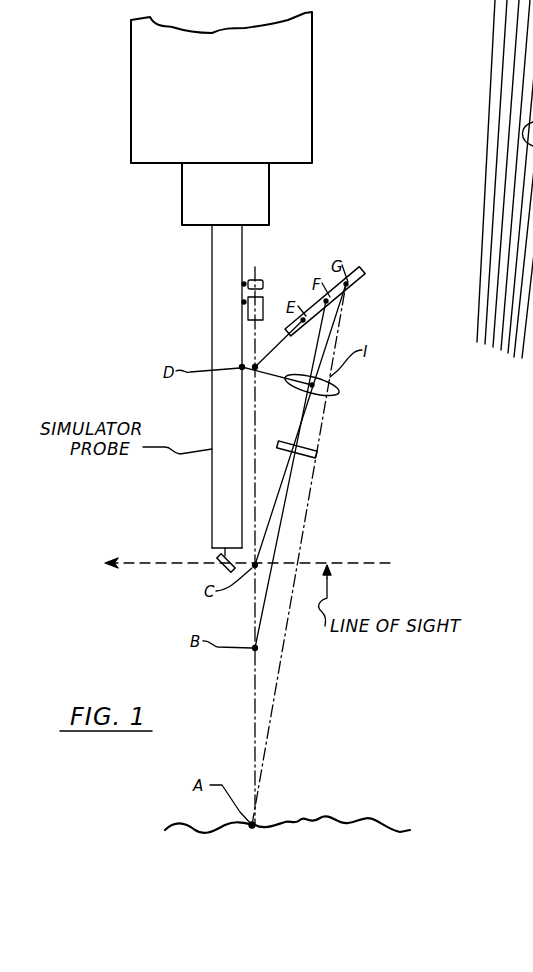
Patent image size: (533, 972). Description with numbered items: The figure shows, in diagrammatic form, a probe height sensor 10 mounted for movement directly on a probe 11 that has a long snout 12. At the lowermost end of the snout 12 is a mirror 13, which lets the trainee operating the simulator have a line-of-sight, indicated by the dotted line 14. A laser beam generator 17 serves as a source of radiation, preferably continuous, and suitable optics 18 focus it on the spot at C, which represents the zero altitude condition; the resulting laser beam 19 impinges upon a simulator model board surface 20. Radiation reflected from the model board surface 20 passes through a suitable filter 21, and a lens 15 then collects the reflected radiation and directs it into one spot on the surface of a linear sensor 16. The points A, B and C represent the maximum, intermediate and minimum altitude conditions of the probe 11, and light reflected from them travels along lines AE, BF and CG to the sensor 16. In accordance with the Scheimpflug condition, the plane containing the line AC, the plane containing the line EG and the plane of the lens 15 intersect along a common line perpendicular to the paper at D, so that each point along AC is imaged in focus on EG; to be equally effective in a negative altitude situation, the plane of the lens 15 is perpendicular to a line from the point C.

The probe height sensor 10 is at (357, 318).
The probe 11 is at (142, 73).
The snout 12 is at (215, 248).
The mirror 13 is at (222, 560).
The line-of-sight 14 is at (352, 563).
The lens 15 is at (330, 394).
The linear sensor 16 is at (362, 272).
The laser beam generator 17 is at (244, 284).
The optics 18 is at (244, 302).
The laser beam 19 is at (258, 428).
The simulator model board surface 20 is at (318, 820).
The filter 21 is at (318, 455).